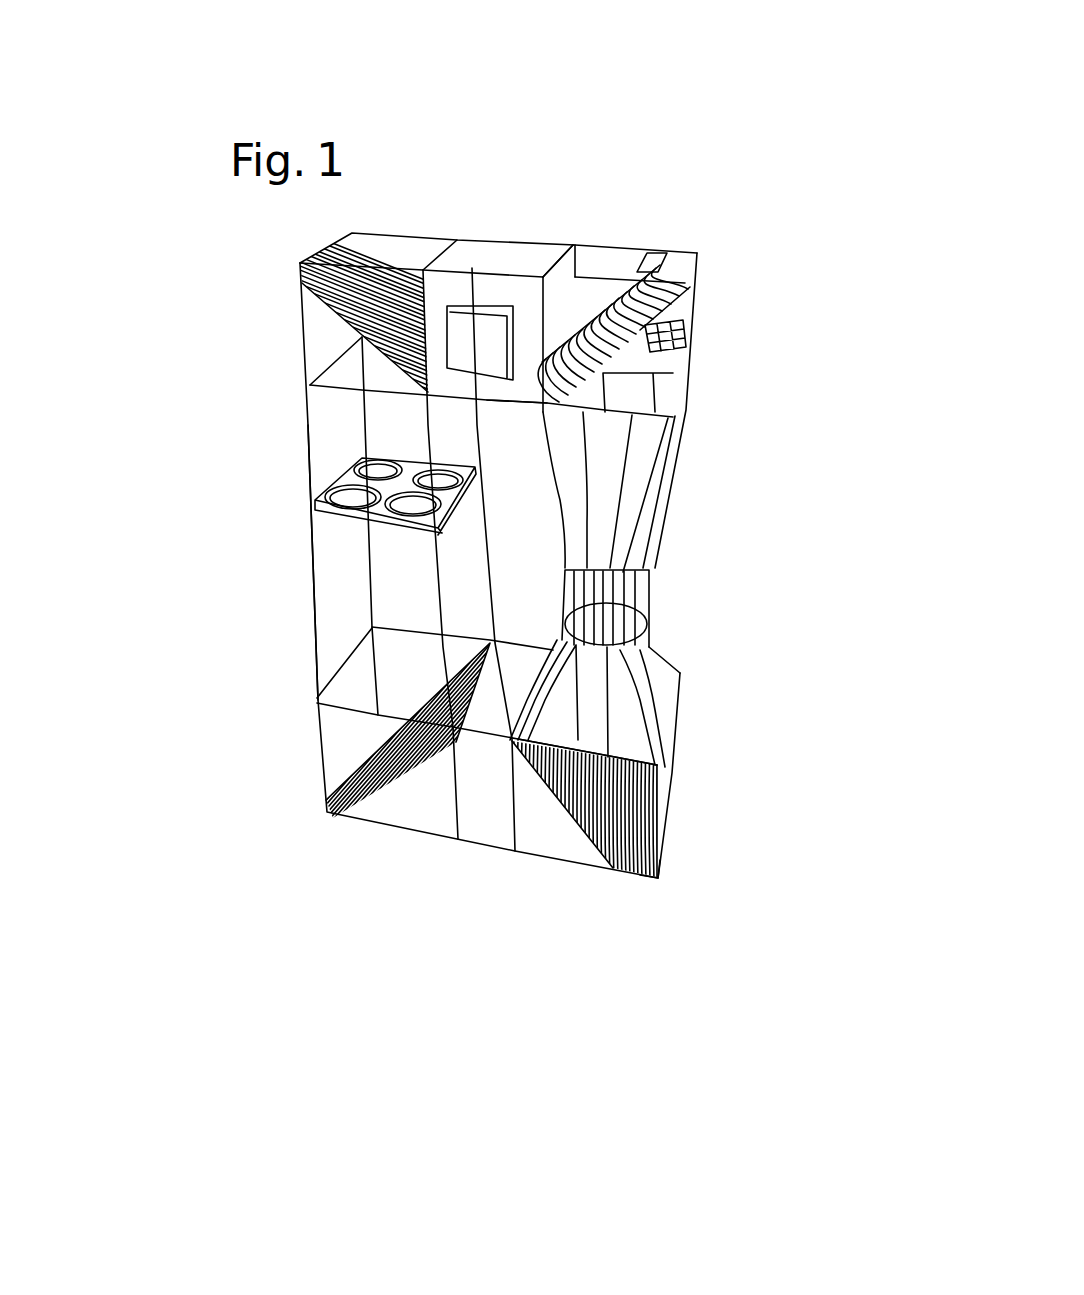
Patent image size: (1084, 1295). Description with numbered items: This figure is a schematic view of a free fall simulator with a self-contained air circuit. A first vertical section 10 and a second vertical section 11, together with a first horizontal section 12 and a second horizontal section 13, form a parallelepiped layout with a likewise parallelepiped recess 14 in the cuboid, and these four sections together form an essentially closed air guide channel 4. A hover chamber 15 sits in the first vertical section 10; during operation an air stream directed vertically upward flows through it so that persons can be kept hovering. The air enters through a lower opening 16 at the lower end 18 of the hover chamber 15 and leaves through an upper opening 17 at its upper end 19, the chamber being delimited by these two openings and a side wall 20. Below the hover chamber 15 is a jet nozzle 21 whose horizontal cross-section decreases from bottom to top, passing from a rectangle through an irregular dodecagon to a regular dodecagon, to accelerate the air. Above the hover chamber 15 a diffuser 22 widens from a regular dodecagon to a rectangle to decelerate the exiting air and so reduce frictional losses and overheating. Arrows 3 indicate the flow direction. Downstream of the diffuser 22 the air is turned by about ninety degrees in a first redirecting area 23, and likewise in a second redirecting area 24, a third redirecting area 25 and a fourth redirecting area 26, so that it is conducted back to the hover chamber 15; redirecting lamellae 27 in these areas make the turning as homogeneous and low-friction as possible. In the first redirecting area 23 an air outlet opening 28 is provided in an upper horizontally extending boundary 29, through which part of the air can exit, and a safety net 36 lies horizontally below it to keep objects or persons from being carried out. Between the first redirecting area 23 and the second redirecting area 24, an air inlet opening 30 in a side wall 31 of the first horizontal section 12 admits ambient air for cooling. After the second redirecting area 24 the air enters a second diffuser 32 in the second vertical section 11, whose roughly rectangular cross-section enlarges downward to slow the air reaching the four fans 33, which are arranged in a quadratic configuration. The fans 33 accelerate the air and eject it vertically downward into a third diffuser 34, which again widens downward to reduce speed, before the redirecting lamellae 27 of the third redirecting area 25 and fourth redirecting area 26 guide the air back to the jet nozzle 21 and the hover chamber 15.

The arrows 3 is at (627, 77).
The air guide channel 4 is at (343, 541).
The first vertical section 10 is at (702, 537).
The second vertical section 11 is at (240, 487).
The first horizontal section 12 is at (557, 199).
The second horizontal section 13 is at (535, 883).
The recess 14 is at (518, 545).
The hover chamber 15 is at (640, 617).
The lower opening 16 is at (640, 652).
The upper opening 17 is at (640, 562).
The lower end 18 is at (640, 687).
The upper end 19 is at (663, 487).
The side wall 20 is at (767, 580).
The jet nozzle 21 is at (627, 723).
The diffuser 22 is at (643, 462).
The first redirecting area 23 is at (697, 253).
The second redirecting area 24 is at (297, 263).
The third redirecting area 25 is at (328, 815).
The fourth redirecting area 26 is at (647, 877).
The redirecting lamellae 27 is at (300, 302).
The air outlet opening 28 is at (663, 253).
The upper horizontally extending boundary 29 is at (587, 247).
The air inlet opening 30 is at (500, 310).
The side wall 31 is at (527, 387).
The second diffuser 32 is at (327, 410).
The fans 33 is at (347, 462).
The third diffuser 34 is at (330, 633).
The safety net 36 is at (687, 337).